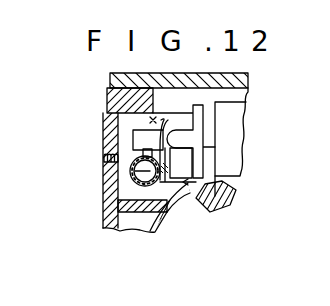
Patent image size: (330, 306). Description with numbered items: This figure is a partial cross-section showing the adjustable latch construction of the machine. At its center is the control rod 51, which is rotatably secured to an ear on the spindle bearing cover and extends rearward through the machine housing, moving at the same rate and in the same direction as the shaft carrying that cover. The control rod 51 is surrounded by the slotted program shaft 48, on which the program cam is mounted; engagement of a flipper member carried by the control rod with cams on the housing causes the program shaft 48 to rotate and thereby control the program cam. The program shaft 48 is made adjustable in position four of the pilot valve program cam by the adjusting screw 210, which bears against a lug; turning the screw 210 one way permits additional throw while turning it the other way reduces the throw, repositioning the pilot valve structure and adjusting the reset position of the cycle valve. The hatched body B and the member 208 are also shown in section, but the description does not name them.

The program shaft 48 is at (117, 187).
The control rod 51 is at (130, 171).
The actuating arm 208 is at (191, 184).
The adjusting screw 210 is at (107, 151).
The block B is at (234, 143).